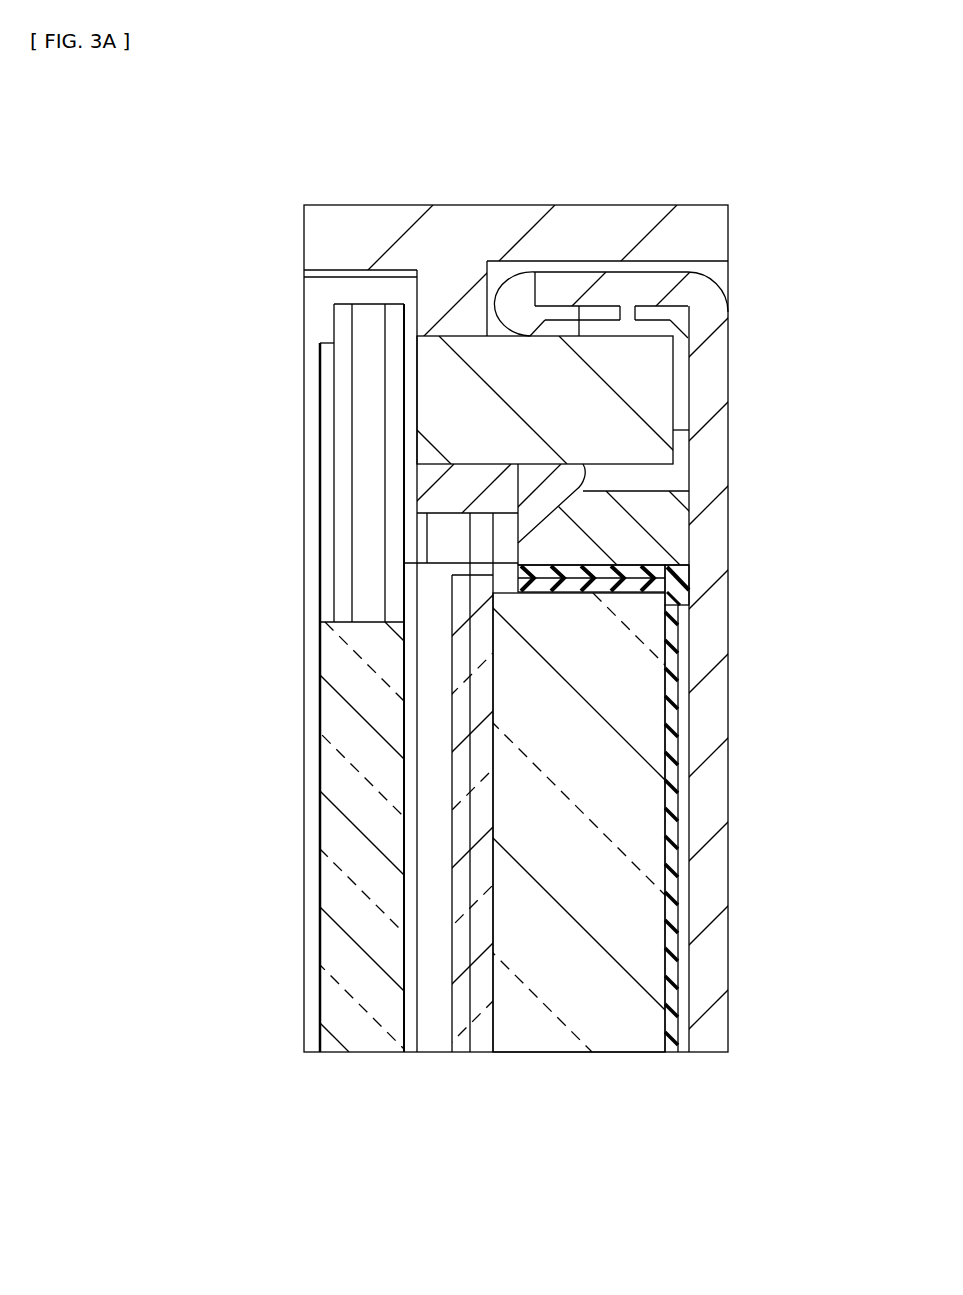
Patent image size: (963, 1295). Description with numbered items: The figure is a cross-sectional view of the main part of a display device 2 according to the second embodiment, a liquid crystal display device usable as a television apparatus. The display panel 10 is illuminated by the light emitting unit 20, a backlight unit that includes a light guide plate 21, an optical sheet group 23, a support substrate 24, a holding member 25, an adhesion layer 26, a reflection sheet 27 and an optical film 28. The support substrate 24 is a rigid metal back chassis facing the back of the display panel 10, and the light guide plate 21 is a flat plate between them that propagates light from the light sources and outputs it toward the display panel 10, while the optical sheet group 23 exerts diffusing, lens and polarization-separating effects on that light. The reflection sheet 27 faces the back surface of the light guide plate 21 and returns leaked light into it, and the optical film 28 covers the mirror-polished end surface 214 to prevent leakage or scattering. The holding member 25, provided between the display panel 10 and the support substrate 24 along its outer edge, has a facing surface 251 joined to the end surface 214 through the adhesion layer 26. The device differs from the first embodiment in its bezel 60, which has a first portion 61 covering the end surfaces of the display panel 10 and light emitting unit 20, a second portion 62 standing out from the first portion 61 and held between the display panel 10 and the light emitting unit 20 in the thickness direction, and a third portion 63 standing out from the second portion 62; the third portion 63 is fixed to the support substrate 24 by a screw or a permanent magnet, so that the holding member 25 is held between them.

The display device 2 is at (299, 1094).
The display panel 10 is at (360, 1045).
The light emitting unit 20 is at (490, 837).
The light guide plate 21 is at (562, 1045).
The optical sheet group 23 is at (580, 1112).
The support substrate 24 is at (720, 441).
The holding member 25 is at (677, 545).
The adhesion layer 26 is at (653, 572).
The reflection sheet 27 is at (672, 805).
The optical film 28 is at (668, 598).
The bezel 60 is at (513, 279).
The first portion 61 is at (514, 216).
The second portion 62 is at (448, 292).
The third portion 63 is at (612, 378).
The end surface 214 is at (585, 565).
The facing surface 251 is at (545, 592).